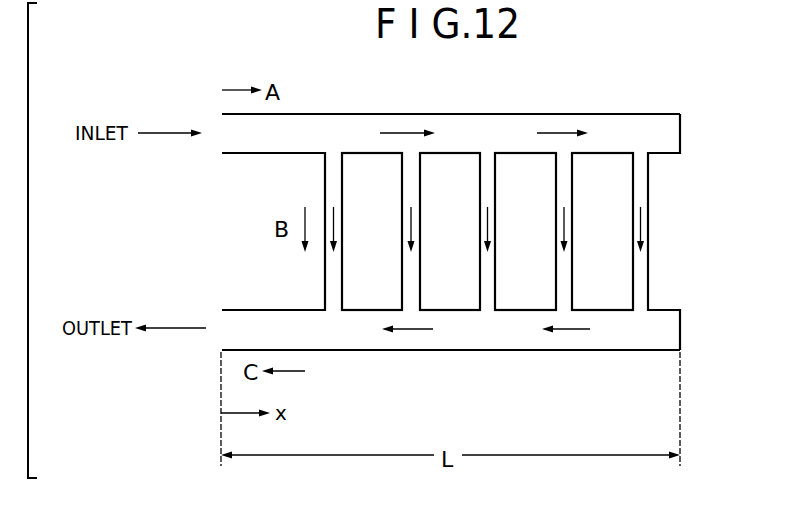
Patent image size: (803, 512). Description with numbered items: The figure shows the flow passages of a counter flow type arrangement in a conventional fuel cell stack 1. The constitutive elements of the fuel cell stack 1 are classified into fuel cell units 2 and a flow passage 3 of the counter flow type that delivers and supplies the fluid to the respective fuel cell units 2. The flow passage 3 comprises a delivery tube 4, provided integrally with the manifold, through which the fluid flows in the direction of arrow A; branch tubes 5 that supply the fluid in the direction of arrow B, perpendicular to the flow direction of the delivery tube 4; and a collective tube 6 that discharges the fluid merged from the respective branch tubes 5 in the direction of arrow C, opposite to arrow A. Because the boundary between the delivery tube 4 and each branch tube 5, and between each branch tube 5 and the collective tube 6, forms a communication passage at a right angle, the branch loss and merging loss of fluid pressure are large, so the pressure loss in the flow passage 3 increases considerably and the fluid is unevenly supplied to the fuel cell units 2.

The fuel cell stack 1 is at (576, 102).
The fuel cell units 2 is at (383, 240).
The flow passage 3 is at (352, 108).
The delivery tube 4 is at (470, 128).
The branch tubes 5 is at (646, 270).
The collective tube 6 is at (467, 338).